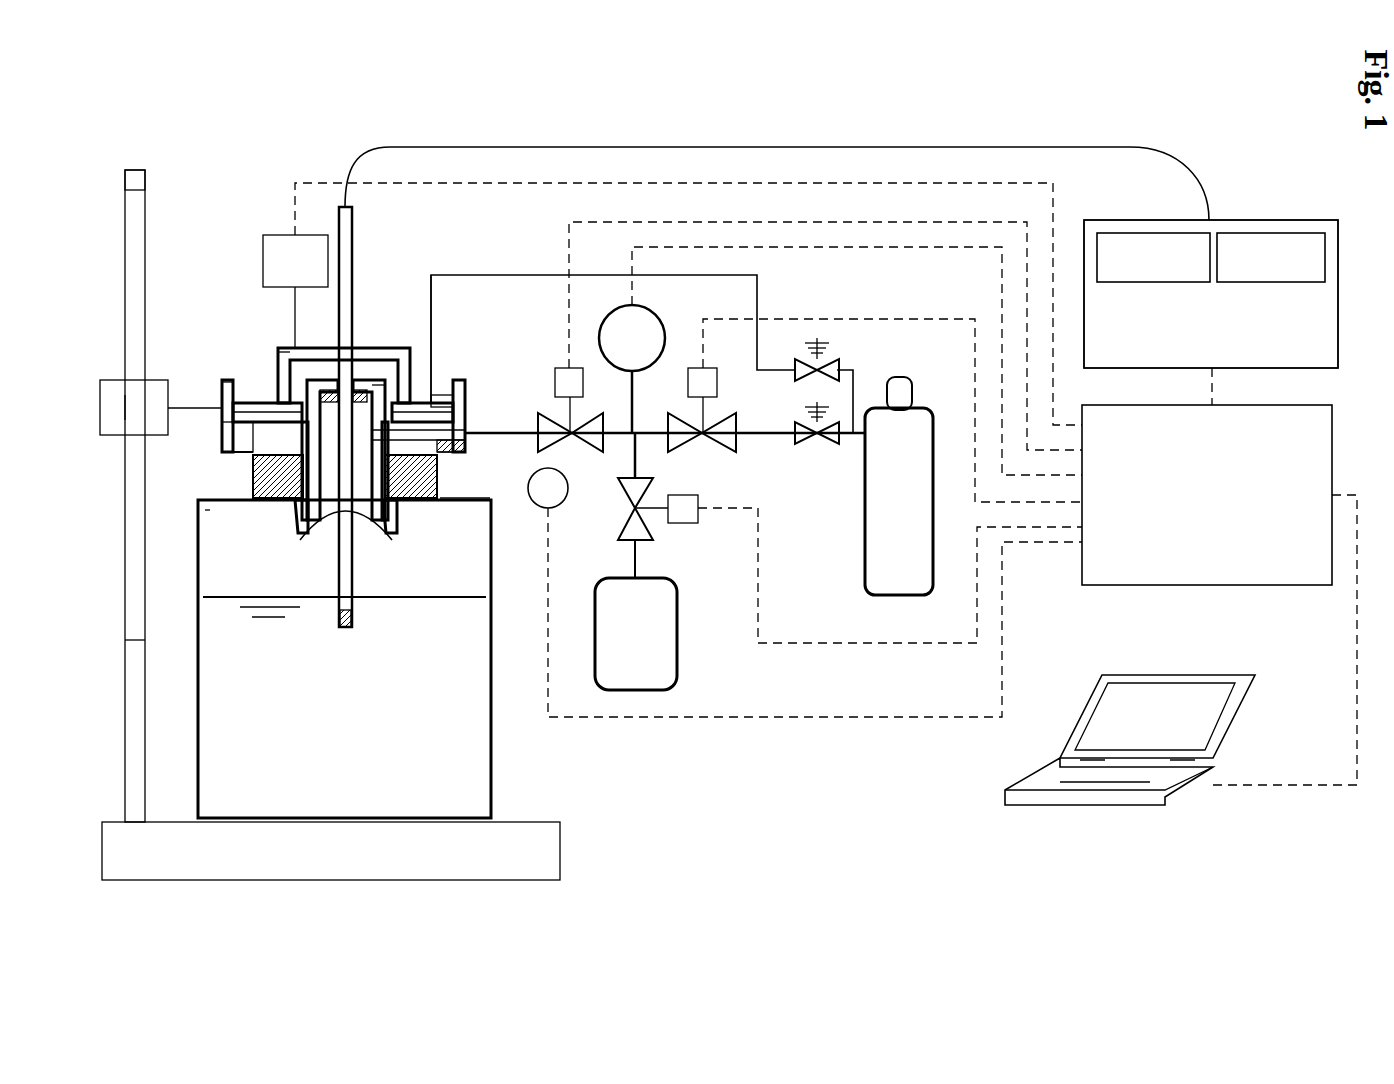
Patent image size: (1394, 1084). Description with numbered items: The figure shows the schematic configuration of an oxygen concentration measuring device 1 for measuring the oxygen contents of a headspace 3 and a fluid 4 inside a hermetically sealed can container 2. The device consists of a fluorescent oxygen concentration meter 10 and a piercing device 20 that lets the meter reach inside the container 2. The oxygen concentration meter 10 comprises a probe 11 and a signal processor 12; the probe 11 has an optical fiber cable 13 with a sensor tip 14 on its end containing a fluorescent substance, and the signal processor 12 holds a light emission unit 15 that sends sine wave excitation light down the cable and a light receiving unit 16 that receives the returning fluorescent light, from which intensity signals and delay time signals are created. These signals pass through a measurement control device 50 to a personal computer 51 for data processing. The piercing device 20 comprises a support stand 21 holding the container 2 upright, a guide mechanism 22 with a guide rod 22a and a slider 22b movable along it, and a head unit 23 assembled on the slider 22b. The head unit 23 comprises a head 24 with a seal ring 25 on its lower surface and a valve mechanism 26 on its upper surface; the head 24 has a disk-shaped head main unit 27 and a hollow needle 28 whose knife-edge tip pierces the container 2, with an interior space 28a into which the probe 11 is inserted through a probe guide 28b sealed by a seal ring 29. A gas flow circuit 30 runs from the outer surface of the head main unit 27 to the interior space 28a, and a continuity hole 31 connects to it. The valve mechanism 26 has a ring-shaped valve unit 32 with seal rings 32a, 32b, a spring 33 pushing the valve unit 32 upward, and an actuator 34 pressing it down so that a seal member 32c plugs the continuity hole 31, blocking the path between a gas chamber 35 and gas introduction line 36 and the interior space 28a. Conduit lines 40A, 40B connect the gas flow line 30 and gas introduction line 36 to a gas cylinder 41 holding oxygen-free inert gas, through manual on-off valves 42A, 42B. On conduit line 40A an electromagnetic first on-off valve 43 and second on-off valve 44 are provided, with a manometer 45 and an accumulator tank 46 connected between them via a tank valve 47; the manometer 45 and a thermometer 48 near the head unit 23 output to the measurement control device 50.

The oxygen concentration measuring device 1 is at (1213, 167).
The container 2 is at (497, 772).
The headspace 3 is at (427, 568).
The fluid 4 is at (422, 730).
The fluorescent oxygen concentration meter 10 is at (395, 262).
The probe 11 is at (352, 258).
The signal processor 12 is at (1308, 220).
The optical fiber cable 13 is at (352, 293).
The sensor tip 14 is at (352, 617).
The light emission unit 15 is at (1140, 233).
The light receiving unit 16 is at (1260, 233).
The piercing device 20 is at (225, 210).
The support stand 21 is at (560, 850).
The guide mechanism 22 is at (170, 268).
The guide rod 22a is at (135, 665).
The slider 22b is at (150, 378).
The head unit 23 is at (256, 306).
The head 24 is at (224, 456).
The seal ring 25 is at (254, 480).
The valve mechanism 26 is at (246, 340).
The head main unit 27 is at (222, 445).
The hollow needle 28 is at (308, 522).
The interior space 28a is at (325, 518).
The probe guide 28b is at (375, 385).
The seal ring 29 is at (330, 392).
The gas flow circuit 30 is at (455, 446).
The continuity hole 31 is at (455, 502).
The valve unit 32 is at (270, 380).
The seal ring 32a is at (268, 502).
The seal ring 32b is at (232, 406).
The seal member 32c is at (455, 510).
The spring 33 is at (430, 458).
The actuator 34 is at (280, 233).
The gas chamber 35 is at (228, 392).
The gas introduction line 36 is at (436, 398).
The conduit line 40A is at (488, 433).
The conduit line 40B is at (490, 274).
The gas cylinder 41 is at (865, 535).
The manual on-off valve 42A is at (818, 448).
The manual on-off valve 42B is at (840, 365).
The first on-off valve 43 is at (575, 455).
The second on-off valve 44 is at (712, 455).
The manometer 45 is at (660, 320).
The accumulator tank 46 is at (677, 660).
The tank valve 47 is at (652, 528).
The thermometer 48 is at (562, 505).
The measurement control device 50 is at (1335, 405).
The personal computer 51 is at (1192, 675).